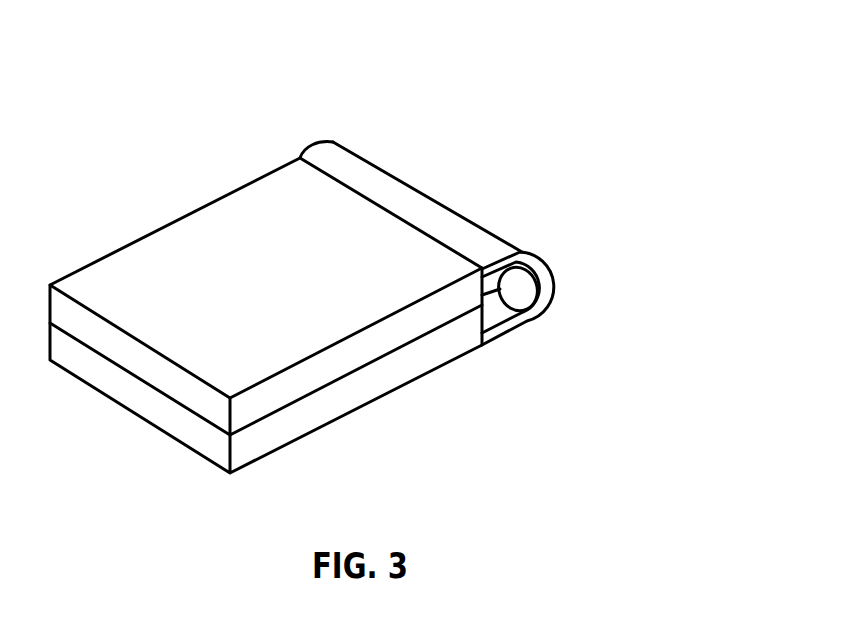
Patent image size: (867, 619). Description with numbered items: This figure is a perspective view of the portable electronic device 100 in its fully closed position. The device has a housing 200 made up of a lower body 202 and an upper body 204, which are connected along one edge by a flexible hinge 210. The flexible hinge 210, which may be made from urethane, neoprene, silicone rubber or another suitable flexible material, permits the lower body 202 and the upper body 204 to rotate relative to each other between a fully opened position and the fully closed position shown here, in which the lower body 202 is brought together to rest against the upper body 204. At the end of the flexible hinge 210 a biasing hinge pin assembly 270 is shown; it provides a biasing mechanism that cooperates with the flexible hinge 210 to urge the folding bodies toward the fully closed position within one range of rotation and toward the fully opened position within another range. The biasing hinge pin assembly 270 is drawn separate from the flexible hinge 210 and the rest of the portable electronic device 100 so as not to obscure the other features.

The portable electronic device 100 is at (585, 68).
The housing 200 is at (287, 163).
The lower body 202 is at (322, 417).
The upper body 204 is at (196, 227).
The flexible hinge 210 is at (423, 202).
The biasing hinge pin assembly 270 is at (540, 299).